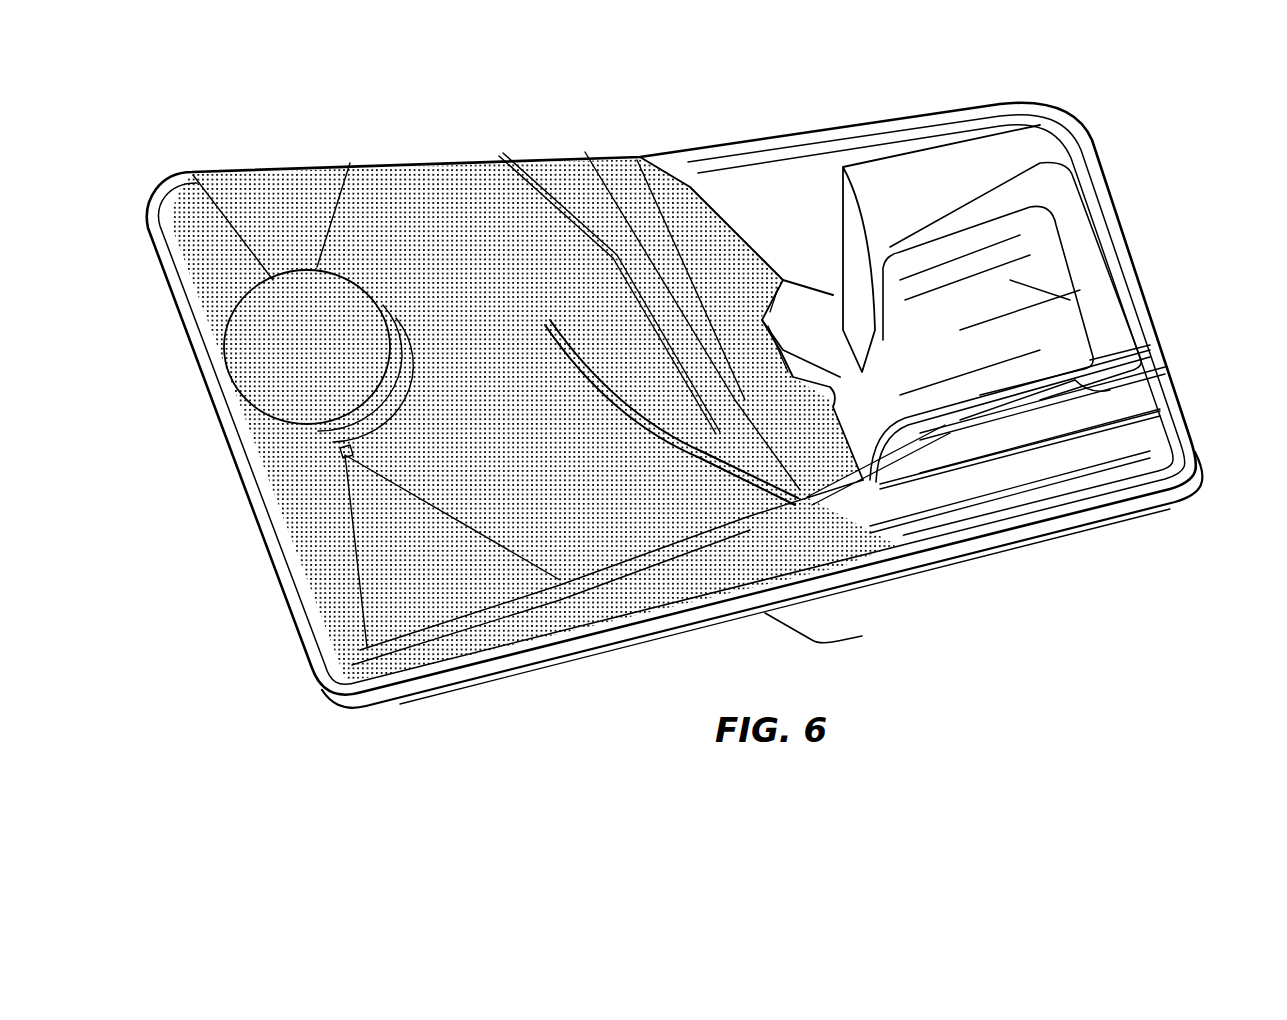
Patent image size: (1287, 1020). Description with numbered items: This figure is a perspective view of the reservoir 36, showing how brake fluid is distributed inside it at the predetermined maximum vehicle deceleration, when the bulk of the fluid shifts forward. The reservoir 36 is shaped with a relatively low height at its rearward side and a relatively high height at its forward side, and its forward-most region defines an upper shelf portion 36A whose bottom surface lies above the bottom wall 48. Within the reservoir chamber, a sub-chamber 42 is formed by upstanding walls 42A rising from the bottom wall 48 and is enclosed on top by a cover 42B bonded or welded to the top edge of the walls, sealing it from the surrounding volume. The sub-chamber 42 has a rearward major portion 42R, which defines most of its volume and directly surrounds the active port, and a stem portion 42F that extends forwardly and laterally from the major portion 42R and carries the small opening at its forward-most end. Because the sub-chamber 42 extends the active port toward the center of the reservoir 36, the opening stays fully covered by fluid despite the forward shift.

The reservoir 36 is at (840, 62).
The upper shelf portion 36A is at (417, 203).
The sub-chamber 42 is at (972, 210).
The upstanding walls 42A is at (1078, 385).
The cover 42B is at (1048, 300).
The stem portion 42F is at (985, 320).
The rearward major portion 42R is at (1040, 330).
The bottom wall 48 is at (1056, 433).